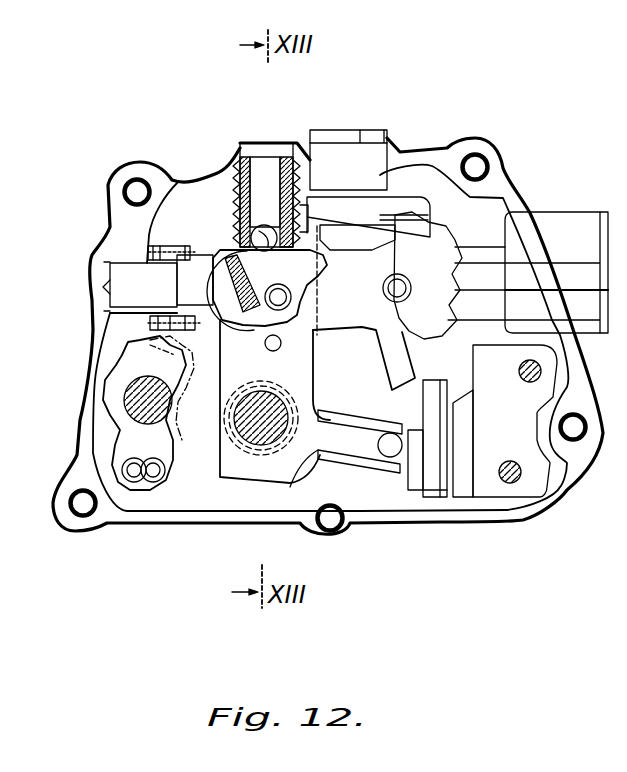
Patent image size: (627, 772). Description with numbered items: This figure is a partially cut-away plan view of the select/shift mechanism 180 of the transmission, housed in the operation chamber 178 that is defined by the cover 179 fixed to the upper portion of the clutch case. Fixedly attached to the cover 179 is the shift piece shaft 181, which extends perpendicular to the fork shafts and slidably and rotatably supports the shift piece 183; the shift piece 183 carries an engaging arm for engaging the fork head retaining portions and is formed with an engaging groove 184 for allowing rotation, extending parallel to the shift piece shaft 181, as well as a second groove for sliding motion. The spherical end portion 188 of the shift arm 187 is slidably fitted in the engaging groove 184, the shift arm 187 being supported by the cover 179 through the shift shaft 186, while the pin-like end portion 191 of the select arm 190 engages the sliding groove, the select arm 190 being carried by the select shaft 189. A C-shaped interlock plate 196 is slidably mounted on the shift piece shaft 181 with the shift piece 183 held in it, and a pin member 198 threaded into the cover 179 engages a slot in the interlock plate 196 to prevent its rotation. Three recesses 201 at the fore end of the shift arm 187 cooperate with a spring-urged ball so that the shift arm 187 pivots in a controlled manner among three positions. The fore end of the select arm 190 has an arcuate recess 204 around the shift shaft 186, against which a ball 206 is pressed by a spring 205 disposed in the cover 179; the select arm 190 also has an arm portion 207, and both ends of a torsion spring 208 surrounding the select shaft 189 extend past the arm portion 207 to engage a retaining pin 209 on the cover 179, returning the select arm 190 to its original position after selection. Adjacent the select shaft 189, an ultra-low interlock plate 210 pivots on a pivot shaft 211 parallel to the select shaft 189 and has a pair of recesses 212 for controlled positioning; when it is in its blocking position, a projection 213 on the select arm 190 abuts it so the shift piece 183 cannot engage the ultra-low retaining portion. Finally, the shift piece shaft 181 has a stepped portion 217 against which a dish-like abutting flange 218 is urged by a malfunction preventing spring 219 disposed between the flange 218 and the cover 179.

The operation chamber 178 is at (382, 510).
The cover 179 is at (232, 515).
The select/shift mechanism 180 is at (452, 216).
The shift piece shaft 181 is at (117, 273).
The shift piece 183 is at (345, 197).
The engaging groove for allowing rotation 184 is at (455, 272).
The shift shaft 186 is at (225, 299).
The shift arm 187 is at (336, 322).
The spherical end portion 188 is at (515, 421).
The select shaft 189 is at (318, 409).
The select arm 190 is at (300, 368).
The pin-like end portion 191 is at (266, 305).
The interlock plate 196 is at (416, 222).
The pin member 198 is at (358, 190).
The recesses 201 is at (385, 275).
The recess 204 is at (277, 289).
The spring 205 is at (245, 160).
The ball 206 is at (243, 218).
The arm portion 207 is at (350, 440).
The torsion spring 208 is at (226, 420).
The retaining pin 209 is at (425, 424).
The ultra-low interlock plate 210 is at (122, 381).
The pivot shaft 211 is at (126, 402).
The recesses 212 is at (152, 476).
The projection 213 is at (152, 346).
The stepped portion 217 is at (170, 263).
The abutting flange 218 is at (195, 246).
The malfunction preventing spring 219 is at (110, 324).